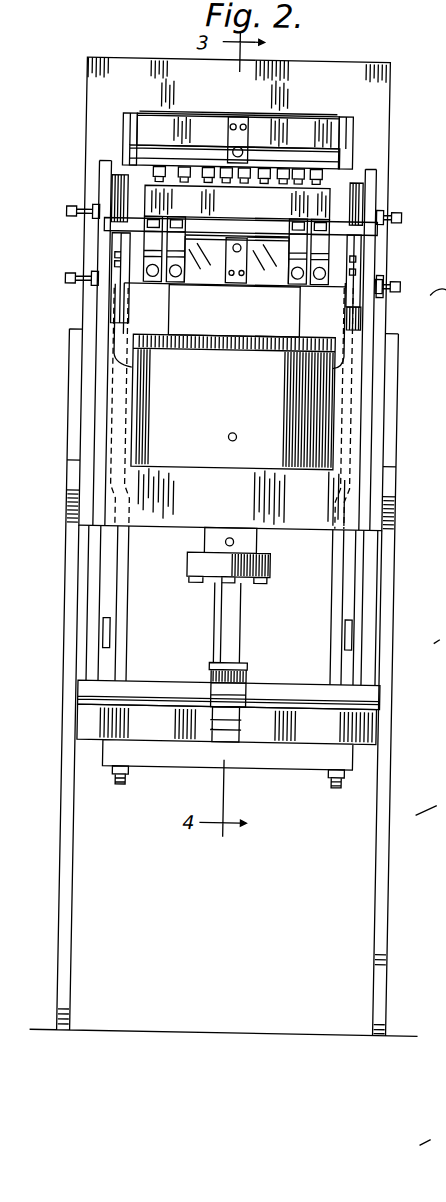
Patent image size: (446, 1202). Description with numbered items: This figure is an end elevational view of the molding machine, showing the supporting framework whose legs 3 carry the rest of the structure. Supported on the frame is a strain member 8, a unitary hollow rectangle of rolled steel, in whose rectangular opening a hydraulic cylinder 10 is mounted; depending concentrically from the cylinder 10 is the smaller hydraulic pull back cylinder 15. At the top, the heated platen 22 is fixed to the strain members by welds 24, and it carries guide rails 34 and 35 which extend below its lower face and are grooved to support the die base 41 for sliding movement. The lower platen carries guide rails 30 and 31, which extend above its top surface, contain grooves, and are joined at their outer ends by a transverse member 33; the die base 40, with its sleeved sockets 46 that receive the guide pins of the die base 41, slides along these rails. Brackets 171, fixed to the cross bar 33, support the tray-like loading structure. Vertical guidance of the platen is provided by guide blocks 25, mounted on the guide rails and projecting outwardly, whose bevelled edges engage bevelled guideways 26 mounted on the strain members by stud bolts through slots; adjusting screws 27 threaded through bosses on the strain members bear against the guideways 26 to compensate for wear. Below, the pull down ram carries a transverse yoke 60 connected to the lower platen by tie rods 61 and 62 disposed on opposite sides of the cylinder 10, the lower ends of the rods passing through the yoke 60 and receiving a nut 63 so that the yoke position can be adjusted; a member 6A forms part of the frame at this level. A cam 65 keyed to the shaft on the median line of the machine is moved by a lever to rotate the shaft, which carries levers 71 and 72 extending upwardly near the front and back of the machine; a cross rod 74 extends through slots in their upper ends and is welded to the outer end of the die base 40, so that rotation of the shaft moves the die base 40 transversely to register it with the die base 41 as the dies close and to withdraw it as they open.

The strain member 8 is at (328, 69).
The legs 3 is at (388, 594).
The platen 22 is at (169, 123).
The welds 24 is at (299, 116).
The guide rail 34 is at (130, 134).
The guide rail 35 is at (344, 132).
The die base 41 is at (265, 152).
The cross rod 74 is at (226, 230).
The brackets 171 is at (172, 240).
The die base 40 is at (277, 242).
The guide rail 30 is at (131, 286).
The transverse member 33 is at (210, 278).
The guide rail 31 is at (343, 281).
The hydraulic cylinder 10 is at (218, 408).
The guideways 26 is at (123, 215).
The guide blocks 25 is at (120, 286).
The adjusting screws 27 is at (66, 208).
The lever 71 is at (105, 566).
The tie rod 61 is at (132, 593).
The tie rod 62 is at (340, 592).
The lever 72 is at (367, 555).
The pull back cylinder 15 is at (261, 542).
The cam 65 is at (253, 669).
The base bar 6A is at (159, 689).
The yoke 60 is at (288, 761).
The nut 63 is at (141, 769).
The sleeved sockets 46 is at (430, 653).